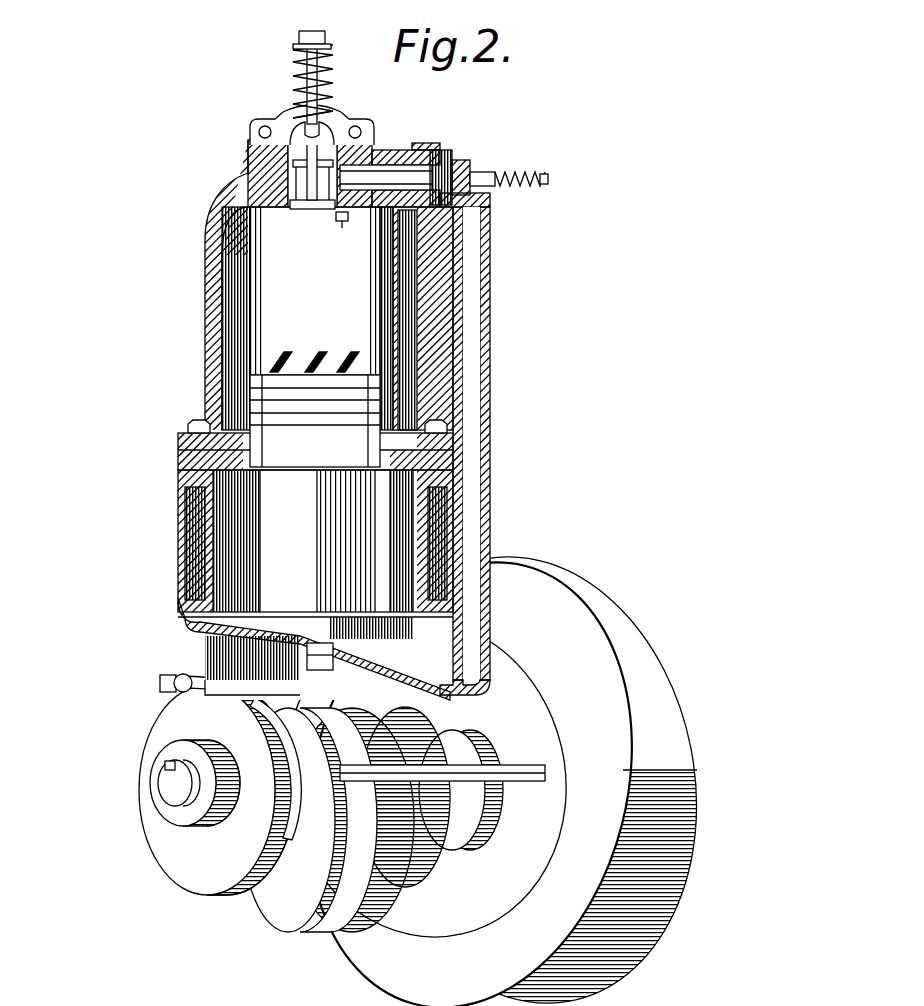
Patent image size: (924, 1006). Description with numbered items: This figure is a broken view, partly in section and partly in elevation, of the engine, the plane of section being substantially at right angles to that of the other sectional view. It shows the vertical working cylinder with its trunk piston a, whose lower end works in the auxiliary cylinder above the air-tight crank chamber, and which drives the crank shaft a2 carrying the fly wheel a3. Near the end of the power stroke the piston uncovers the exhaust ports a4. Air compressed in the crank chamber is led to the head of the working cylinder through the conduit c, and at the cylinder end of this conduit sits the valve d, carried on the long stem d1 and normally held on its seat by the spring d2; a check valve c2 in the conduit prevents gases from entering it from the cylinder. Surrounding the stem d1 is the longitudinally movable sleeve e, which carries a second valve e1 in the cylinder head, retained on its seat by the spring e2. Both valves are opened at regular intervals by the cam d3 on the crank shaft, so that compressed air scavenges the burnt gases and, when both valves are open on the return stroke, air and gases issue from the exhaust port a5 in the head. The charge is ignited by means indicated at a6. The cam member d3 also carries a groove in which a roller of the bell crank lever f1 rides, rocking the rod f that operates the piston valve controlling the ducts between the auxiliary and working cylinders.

The trunk piston a is at (315, 428).
The crank shaft a2 is at (160, 784).
The fly wheel a3 is at (494, 503).
The exhaust ports a4 is at (350, 368).
The exhaust port a5 is at (340, 125).
The igniting means a6 is at (341, 223).
The conduit c is at (383, 177).
The check valve c2 is at (437, 157).
The valve d is at (306, 205).
The valve stem d1 is at (303, 193).
The valve spring d2 is at (328, 87).
The cam d3 is at (289, 760).
The sleeve e is at (307, 103).
The valve e1 is at (260, 145).
The spring e2 is at (300, 57).
The rod f is at (313, 658).
The bell crank lever f1 is at (197, 680).